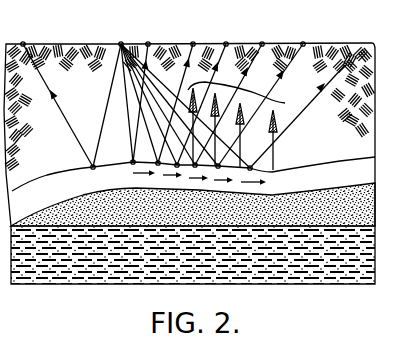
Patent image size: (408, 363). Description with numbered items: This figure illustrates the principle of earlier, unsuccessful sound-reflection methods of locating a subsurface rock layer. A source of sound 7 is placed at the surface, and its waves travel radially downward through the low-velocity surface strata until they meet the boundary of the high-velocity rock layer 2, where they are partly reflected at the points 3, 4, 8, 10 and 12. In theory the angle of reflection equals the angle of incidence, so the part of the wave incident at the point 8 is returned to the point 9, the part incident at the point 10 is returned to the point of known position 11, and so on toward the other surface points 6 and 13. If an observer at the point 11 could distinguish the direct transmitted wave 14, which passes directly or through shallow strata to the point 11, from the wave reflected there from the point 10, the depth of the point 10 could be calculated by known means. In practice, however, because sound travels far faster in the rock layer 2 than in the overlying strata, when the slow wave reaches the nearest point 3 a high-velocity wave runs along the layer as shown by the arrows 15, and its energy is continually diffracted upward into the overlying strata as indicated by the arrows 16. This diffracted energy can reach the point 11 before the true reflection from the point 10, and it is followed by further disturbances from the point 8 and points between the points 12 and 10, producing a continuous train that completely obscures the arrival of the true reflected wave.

The rock layer 2 is at (59, 107).
The nearest point of reflecting rock layer 3 is at (132, 104).
The point on reflecting boundary 4 is at (168, 104).
The surface point 6 is at (194, 31).
The source of sound 7 is at (171, 91).
The point on reflecting boundary 8 is at (198, 105).
The reflection receiving point 9 is at (227, 31).
The point on reflecting boundary 10 is at (225, 105).
The point of known position 11 is at (265, 32).
The point on reflecting boundary 12 is at (257, 106).
The surface point 13 is at (308, 32).
The direct transmitted wave 14 is at (293, 117).
The arrows indicating wave along rock layer 15 is at (214, 182).
The arrows indicating diffracted energy 16 is at (236, 126).